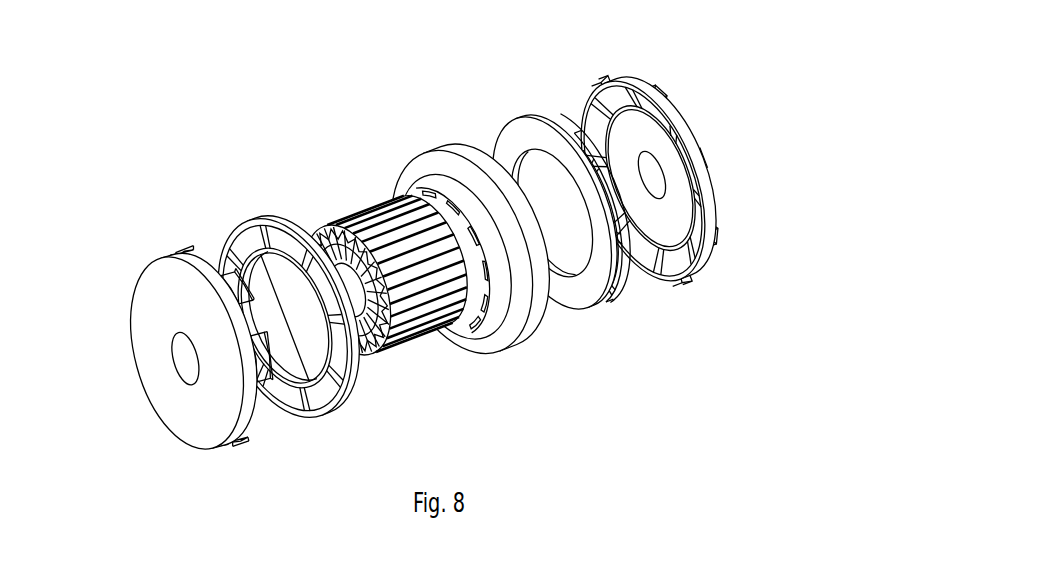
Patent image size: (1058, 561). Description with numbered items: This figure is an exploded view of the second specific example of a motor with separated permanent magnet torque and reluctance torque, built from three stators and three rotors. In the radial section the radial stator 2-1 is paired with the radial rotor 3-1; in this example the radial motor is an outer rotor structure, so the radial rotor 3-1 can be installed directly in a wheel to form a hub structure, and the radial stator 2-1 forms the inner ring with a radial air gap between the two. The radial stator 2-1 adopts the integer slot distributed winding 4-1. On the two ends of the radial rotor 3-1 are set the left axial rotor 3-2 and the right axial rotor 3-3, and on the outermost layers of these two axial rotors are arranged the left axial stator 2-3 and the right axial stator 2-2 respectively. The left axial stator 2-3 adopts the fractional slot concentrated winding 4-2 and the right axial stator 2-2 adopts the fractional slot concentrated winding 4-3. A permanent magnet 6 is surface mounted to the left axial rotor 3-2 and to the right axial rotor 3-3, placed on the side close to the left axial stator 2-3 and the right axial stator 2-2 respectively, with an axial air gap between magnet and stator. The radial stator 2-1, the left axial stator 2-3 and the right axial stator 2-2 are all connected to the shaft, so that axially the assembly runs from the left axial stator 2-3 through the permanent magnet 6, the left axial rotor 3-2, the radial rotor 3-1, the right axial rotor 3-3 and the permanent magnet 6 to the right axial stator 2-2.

The radial stator 2-1 is at (323, 223).
The right axial stator 2-2 is at (645, 160).
The left axial stator 2-3 is at (172, 298).
The radial rotor 3-1 is at (433, 163).
The left axial rotor 3-2 is at (342, 403).
The right axial rotor 3-3 is at (590, 300).
The integer slot distributed winding 4-1 is at (332, 240).
The fractional slot concentrated winding 4-2 is at (167, 255).
The fractional slot concentrated winding 4-3 is at (613, 78).
The permanent magnet 6 is at (419, 272).